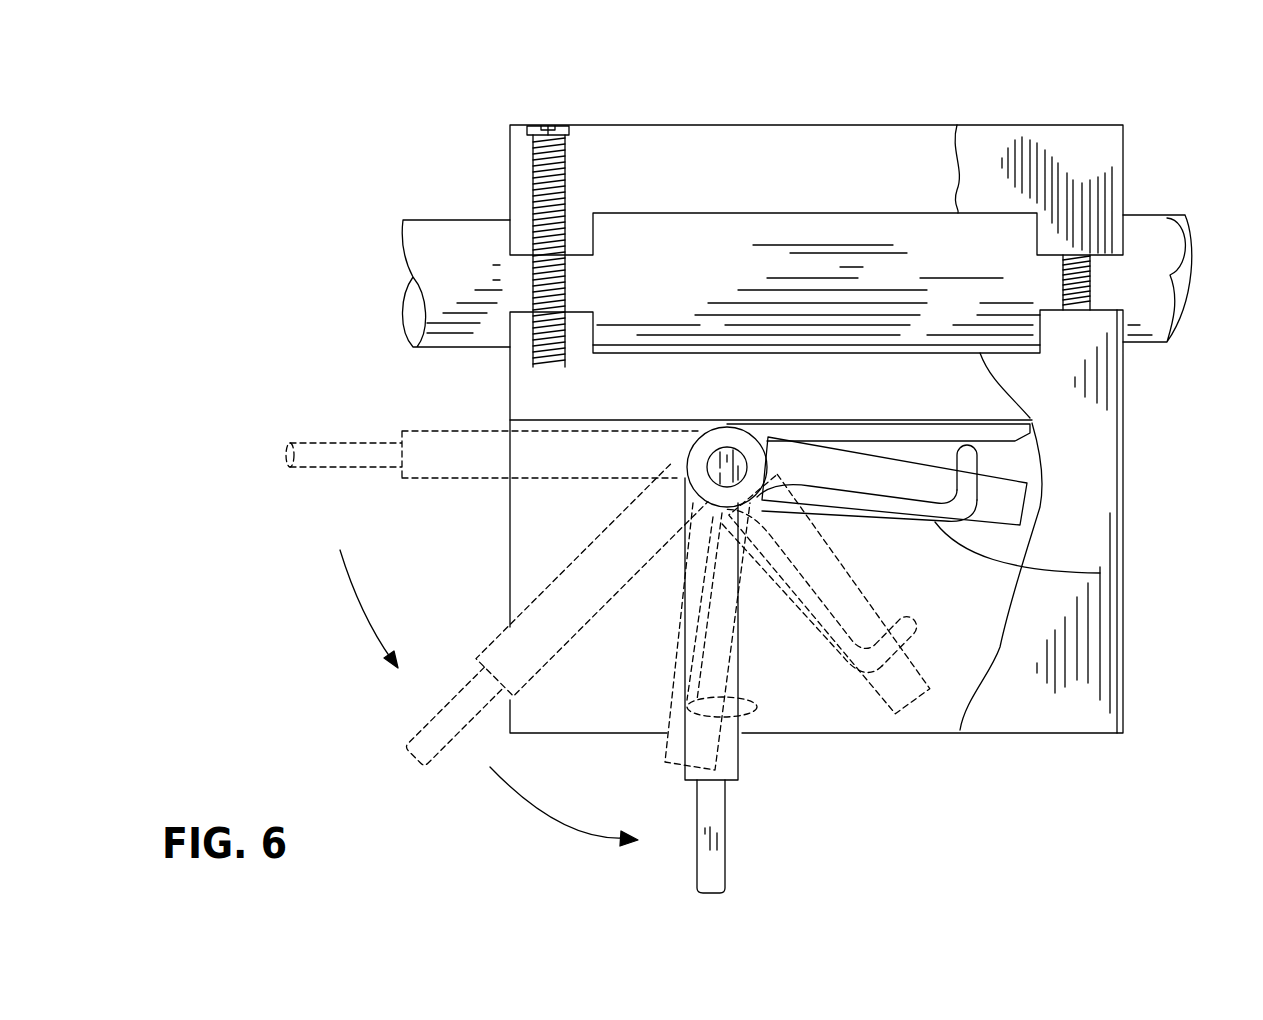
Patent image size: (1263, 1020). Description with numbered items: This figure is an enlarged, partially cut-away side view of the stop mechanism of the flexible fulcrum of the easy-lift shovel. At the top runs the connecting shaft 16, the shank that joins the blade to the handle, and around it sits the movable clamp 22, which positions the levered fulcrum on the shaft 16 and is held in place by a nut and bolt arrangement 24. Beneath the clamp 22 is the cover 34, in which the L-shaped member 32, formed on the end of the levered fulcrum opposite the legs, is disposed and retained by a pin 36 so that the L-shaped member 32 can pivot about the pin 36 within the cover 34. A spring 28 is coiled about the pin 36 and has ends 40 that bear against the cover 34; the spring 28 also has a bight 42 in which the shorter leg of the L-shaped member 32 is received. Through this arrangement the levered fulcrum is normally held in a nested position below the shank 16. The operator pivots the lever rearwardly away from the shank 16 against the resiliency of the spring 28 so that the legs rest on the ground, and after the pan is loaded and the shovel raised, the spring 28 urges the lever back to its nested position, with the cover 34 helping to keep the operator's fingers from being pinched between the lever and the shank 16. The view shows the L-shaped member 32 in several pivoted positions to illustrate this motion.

The connecting shaft 16 is at (432, 220).
The movable clamp 22 is at (744, 128).
The nut and bolt arrangement 24 is at (540, 125).
The spring 28 is at (1100, 573).
The L-shaped member 32 is at (1022, 507).
The cover 34 is at (518, 550).
The pin 36 is at (712, 462).
The ends 40 is at (1025, 427).
The bight 42 is at (980, 462).